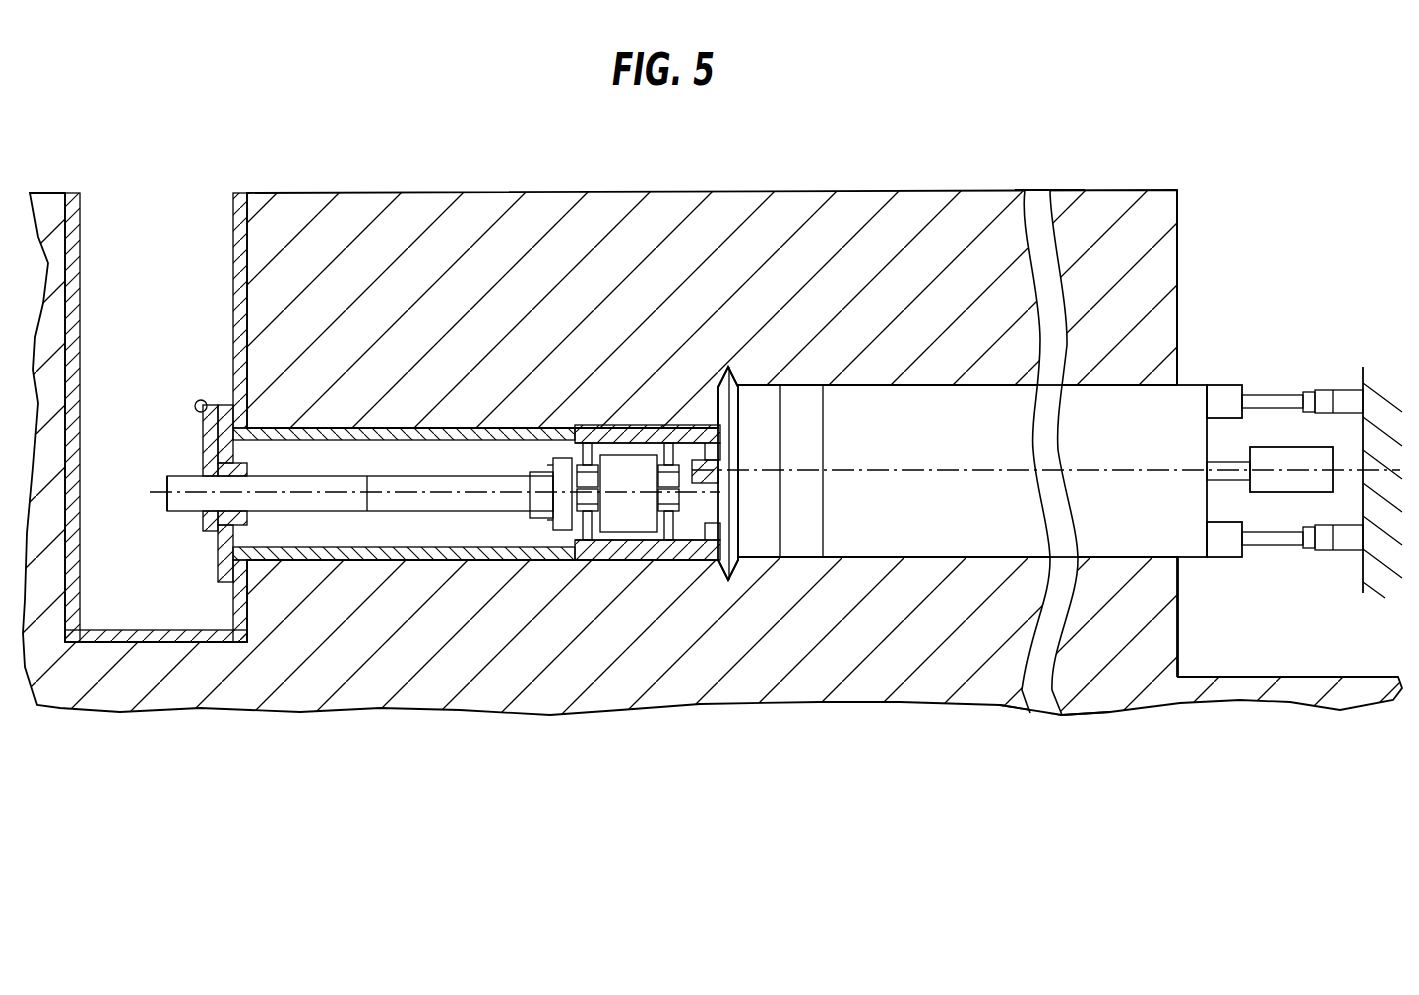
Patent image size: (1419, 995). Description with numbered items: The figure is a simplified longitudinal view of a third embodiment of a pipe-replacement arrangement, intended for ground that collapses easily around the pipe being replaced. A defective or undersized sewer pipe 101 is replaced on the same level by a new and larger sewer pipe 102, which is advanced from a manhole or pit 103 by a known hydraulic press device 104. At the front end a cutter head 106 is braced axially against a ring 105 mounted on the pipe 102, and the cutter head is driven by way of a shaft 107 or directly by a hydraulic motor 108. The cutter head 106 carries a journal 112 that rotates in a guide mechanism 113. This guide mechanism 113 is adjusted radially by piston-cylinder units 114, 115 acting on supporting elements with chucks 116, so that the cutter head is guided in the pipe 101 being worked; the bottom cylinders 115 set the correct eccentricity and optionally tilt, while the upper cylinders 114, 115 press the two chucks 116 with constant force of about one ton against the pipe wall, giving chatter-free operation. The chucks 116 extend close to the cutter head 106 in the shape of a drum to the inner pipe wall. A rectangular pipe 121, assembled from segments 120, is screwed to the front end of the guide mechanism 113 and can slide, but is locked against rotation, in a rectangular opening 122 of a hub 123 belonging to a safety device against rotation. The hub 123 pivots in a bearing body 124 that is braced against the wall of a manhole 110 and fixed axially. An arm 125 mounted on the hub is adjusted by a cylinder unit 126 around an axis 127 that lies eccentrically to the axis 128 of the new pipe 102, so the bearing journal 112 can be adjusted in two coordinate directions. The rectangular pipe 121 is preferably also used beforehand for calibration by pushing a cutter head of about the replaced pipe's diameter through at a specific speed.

The sewer pipe 101 is at (525, 562).
The new sewer pipe 102 is at (1149, 412).
The manhole or pit 103 is at (1302, 276).
The hydraulic press device 104 is at (1337, 389).
The ring 105 is at (797, 540).
The cutter head 106 is at (747, 560).
The shaft 107 is at (1220, 465).
The hydraulic motor 108 is at (1277, 465).
The manhole 110 is at (157, 280).
The journal 112 is at (693, 426).
The guide mechanism 113 is at (632, 568).
The piston-cylinder unit 114 is at (587, 560).
The piston-cylinder unit 115 is at (643, 437).
The chuck 116 is at (600, 426).
The segment 120 is at (470, 482).
The rectangular pipe 121 is at (367, 470).
The rectangular opening 122 is at (207, 479).
The hub 123 is at (204, 526).
The bearing body 124 is at (216, 564).
The arm 125 is at (205, 440).
The cylinder unit 126 is at (196, 403).
The axis 127 is at (165, 497).
The axis of new pipe 128 is at (878, 468).